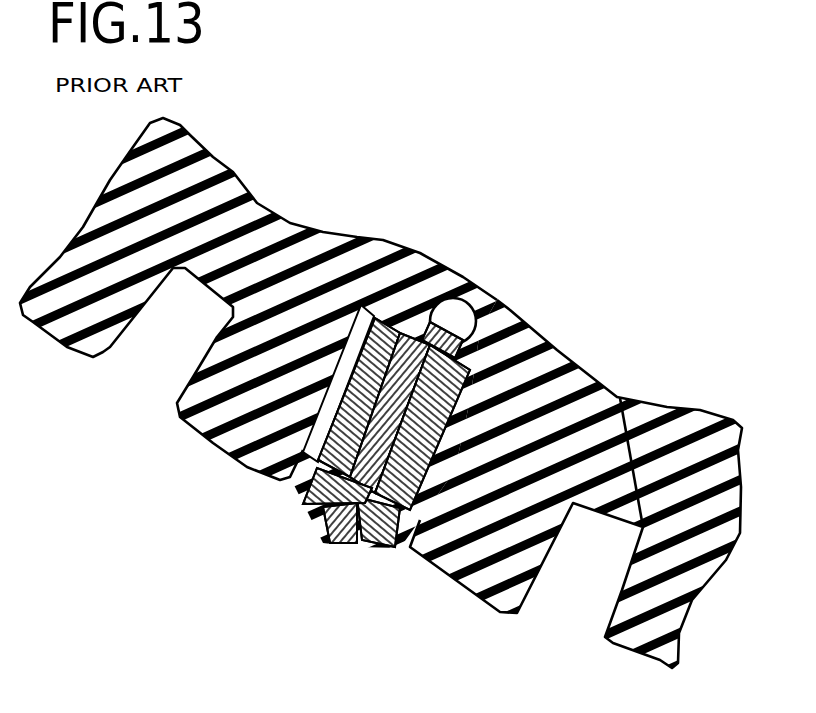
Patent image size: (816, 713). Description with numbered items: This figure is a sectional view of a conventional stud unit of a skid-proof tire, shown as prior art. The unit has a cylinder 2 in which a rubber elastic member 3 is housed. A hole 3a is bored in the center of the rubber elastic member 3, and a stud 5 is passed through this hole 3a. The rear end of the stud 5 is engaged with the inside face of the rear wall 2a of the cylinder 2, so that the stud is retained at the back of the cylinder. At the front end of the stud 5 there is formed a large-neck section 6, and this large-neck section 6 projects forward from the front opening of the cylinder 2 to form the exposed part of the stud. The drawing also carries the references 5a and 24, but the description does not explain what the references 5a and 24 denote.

The cylinder 2 is at (313, 450).
The rear wall 2a is at (523, 350).
The rubber elastic member 3 is at (420, 322).
The hole 3a is at (335, 317).
The stud 5 is at (372, 547).
The bolt head 5a is at (457, 520).
The large-neck section 6 is at (312, 513).
The member 24 is at (441, 0).